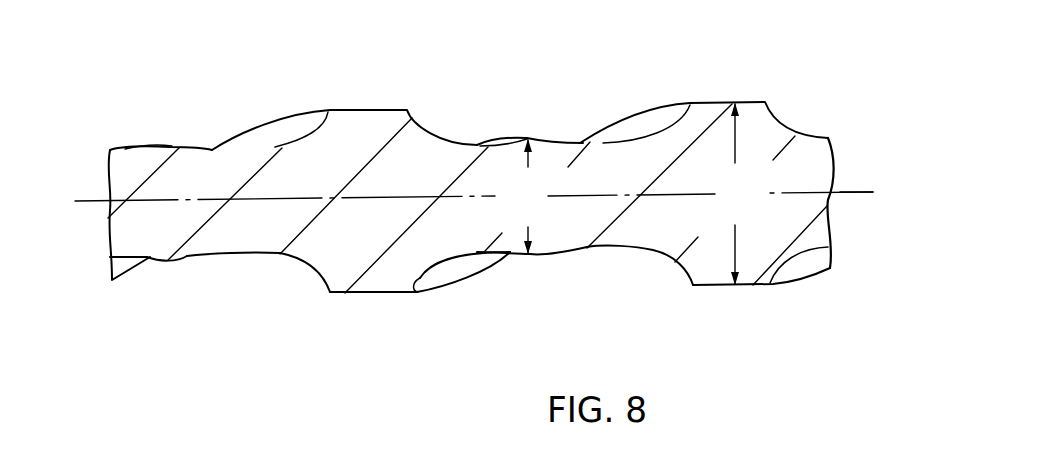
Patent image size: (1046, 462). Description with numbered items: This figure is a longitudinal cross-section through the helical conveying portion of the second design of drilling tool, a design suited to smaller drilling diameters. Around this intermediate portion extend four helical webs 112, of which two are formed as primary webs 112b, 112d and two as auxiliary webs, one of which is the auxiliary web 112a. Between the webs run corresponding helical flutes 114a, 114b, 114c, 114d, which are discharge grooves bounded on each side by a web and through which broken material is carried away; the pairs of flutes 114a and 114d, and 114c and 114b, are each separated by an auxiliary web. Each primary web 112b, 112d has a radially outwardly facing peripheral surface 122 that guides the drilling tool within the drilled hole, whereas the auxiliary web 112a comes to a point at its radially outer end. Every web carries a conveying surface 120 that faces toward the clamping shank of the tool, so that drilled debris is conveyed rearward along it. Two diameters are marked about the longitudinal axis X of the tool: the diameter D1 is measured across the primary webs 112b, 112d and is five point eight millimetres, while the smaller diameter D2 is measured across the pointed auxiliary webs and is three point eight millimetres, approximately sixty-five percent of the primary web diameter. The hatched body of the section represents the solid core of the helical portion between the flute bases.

The helical web 112 is at (527, 138).
The auxiliary web 112a is at (170, 145).
The primary web 112b is at (708, 103).
The primary web 112d is at (360, 110).
The helical flute 114a is at (140, 147).
The helical flute 114b is at (620, 142).
The helical flute 114c is at (472, 143).
The helical flute 114d is at (235, 148).
The conveying surface 120 is at (189, 260).
The radially outwardly facing peripheral surface 122 is at (347, 295).
The diameter of the primary webs D1 is at (738, 194).
The diameter of the auxiliary webs D2 is at (521, 196).
The longitudinal axis X is at (853, 192).